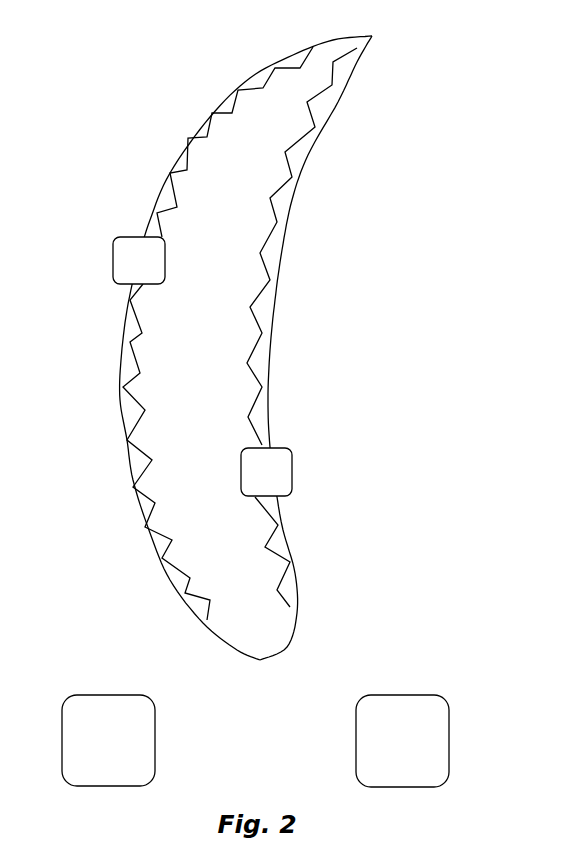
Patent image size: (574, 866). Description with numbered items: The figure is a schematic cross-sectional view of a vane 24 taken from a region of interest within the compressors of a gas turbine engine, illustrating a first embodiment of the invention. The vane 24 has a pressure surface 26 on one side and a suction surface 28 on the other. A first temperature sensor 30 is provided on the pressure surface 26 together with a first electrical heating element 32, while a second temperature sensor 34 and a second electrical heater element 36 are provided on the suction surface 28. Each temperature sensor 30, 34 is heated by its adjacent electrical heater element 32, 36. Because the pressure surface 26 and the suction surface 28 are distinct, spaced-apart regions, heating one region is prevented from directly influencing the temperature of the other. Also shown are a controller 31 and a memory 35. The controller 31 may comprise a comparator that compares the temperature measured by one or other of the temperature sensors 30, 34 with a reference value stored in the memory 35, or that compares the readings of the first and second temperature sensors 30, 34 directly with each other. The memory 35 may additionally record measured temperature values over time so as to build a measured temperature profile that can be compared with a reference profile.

The vane 24 is at (190, 331).
The pressure surface 26 is at (270, 402).
The suction surface 28 is at (127, 443).
The first temperature sensor 30 is at (283, 473).
The controller 31 is at (95, 755).
The first electrical heating element 32 is at (292, 577).
The second temperature sensor 34 is at (117, 247).
The memory 35 is at (389, 755).
The second electrical heater element 36 is at (162, 200).